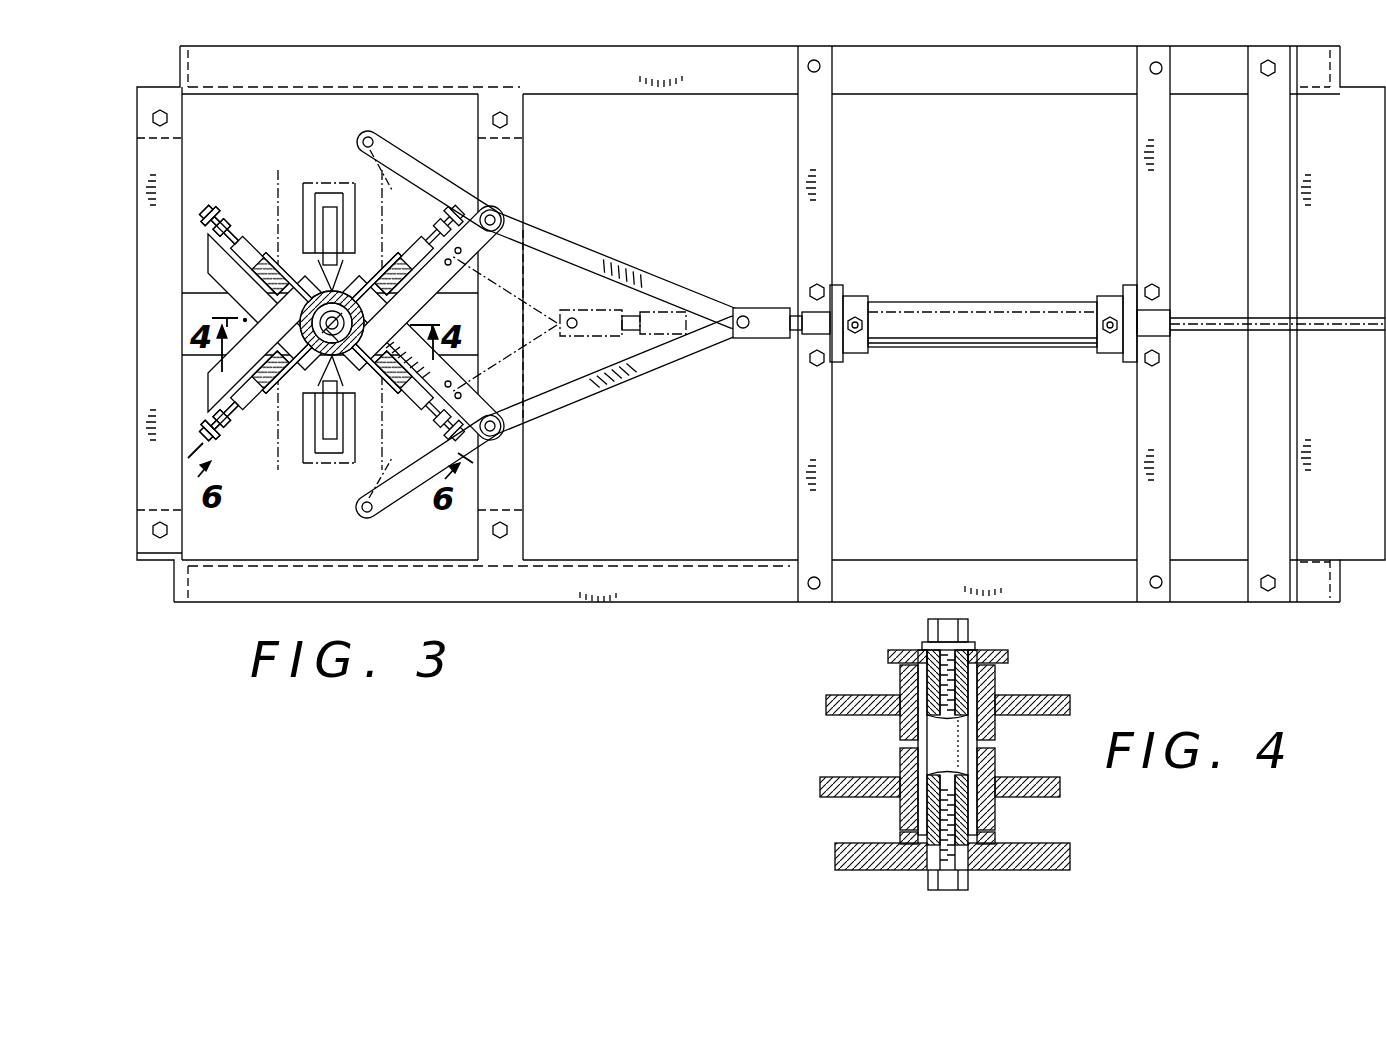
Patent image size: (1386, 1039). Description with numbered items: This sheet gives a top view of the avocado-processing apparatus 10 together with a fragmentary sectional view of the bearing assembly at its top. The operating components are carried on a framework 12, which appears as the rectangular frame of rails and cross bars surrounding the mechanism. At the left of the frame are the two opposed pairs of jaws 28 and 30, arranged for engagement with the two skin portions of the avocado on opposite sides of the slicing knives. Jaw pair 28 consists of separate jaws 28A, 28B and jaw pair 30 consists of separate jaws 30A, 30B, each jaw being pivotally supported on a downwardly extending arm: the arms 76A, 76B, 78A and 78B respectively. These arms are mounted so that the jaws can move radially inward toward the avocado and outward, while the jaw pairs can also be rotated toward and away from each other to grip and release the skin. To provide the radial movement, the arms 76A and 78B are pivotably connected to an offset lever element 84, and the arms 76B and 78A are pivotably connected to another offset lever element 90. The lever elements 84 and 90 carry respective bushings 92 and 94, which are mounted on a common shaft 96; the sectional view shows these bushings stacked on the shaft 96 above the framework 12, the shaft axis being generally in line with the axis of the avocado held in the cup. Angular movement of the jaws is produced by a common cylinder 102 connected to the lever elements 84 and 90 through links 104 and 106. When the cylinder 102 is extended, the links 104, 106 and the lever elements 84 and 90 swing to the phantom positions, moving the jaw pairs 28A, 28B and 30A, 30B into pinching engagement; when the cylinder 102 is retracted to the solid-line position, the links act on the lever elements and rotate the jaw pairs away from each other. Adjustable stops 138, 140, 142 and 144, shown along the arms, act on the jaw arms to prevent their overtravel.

In FIG. 3, the apparatus 10 is at (676, 617).
In FIG. 3, the framework 12 is at (1030, 50).
In FIG. 4, the framework 12 is at (835, 856).
In FIG. 3, the jaw pair 28 is at (323, 455).
In FIG. 3, the jaw 28A is at (403, 402).
In FIG. 3, the jaw 28B is at (259, 412).
In FIG. 3, the jaw pair 30 is at (330, 211).
In FIG. 3, the jaw 30A is at (380, 244).
In FIG. 3, the jaw 30B is at (270, 236).
In FIG. 3, the arm 76A is at (480, 378).
In FIG. 3, the arm 76B is at (228, 379).
In FIG. 3, the arm 78A is at (416, 300).
In FIG. 3, the arm 78B is at (252, 218).
In FIG. 3, the offset lever element 84 is at (210, 273).
In FIG. 4, the offset lever element 84 is at (827, 798).
In FIG. 3, the offset lever element 90 is at (225, 390).
In FIG. 4, the offset lever element 90 is at (1050, 695).
In FIG. 4, the bushing 92 is at (900, 674).
In FIG. 4, the bushing 94 is at (995, 817).
In FIG. 3, the shaft 96 is at (297, 318).
In FIG. 4, the shaft 96 is at (932, 733).
In FIG. 3, the cylinder 102 is at (992, 305).
In FIG. 3, the link 104 is at (712, 360).
In FIG. 3, the link 106 is at (627, 262).
In FIG. 3, the adjustable stop 138 is at (500, 442).
In FIG. 3, the adjustable stop 140 is at (228, 405).
In FIG. 3, the adjustable stop 142 is at (503, 205).
In FIG. 3, the adjustable stop 144 is at (222, 243).